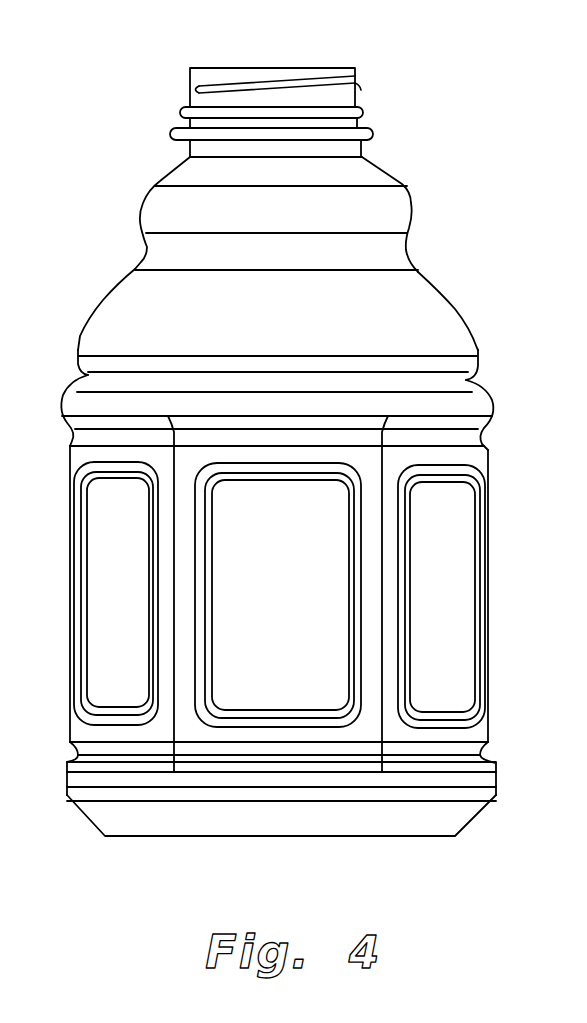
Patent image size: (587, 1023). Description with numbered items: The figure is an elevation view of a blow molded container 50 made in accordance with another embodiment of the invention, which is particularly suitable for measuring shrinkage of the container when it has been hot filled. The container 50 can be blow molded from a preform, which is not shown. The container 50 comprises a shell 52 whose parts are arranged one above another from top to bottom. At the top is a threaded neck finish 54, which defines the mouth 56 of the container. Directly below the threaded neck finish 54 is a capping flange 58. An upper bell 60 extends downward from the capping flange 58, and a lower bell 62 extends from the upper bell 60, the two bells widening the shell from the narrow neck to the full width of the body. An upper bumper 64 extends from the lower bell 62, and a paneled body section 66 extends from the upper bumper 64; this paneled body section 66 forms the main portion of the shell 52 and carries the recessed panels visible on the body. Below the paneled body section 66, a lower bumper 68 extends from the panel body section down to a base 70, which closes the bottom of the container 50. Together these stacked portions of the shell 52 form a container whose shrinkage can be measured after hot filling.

The container 50 is at (137, 133).
The shell 52 is at (112, 290).
The threaded neck finish 54 is at (358, 96).
The mouth 56 is at (212, 66).
The capping flange 58 is at (364, 129).
The upper bell 60 is at (410, 202).
The lower bell 62 is at (455, 303).
The upper bumper 64 is at (495, 408).
The paneled body section 66 is at (70, 580).
The lower bumper 68 is at (67, 784).
The base 70 is at (407, 840).